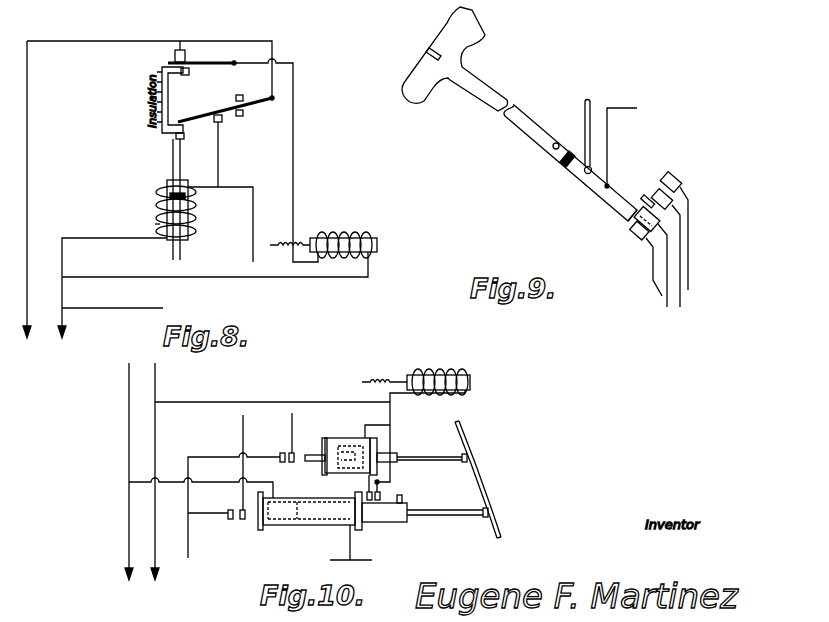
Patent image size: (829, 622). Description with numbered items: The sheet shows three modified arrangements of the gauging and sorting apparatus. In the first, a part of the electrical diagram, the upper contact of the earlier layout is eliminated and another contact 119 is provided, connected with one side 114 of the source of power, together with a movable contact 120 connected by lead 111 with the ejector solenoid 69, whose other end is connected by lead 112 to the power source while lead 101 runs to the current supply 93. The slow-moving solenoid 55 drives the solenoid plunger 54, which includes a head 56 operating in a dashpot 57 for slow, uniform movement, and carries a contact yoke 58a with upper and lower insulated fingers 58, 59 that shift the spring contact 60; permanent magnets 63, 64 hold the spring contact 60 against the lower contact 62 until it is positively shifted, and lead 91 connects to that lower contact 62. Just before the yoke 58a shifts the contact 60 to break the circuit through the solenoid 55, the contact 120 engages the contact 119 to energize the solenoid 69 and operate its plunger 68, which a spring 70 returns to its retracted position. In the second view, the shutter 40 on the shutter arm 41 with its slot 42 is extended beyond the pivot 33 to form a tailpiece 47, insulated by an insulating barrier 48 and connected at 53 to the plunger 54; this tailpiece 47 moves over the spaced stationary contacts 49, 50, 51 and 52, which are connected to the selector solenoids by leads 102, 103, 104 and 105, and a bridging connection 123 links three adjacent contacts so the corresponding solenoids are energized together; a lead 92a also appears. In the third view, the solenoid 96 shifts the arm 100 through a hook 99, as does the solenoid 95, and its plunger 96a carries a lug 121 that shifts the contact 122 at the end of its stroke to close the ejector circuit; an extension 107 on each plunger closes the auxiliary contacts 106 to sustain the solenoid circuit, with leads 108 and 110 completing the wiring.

In FIG. 9, the pivot 33 is at (553, 148).
In FIG. 9, the shutter 40 is at (478, 32).
In FIG. 9, the shutter arm 41 is at (523, 117).
In FIG. 9, the slot 42 is at (436, 33).
In FIG. 9, the tailpiece 47 is at (611, 195).
In FIG. 9, the insulating barrier 48 is at (567, 165).
In FIG. 9, the stationary contact 49 is at (638, 234).
In FIG. 9, the stationary contact 50 is at (630, 222).
In FIG. 9, the stationary contact 51 is at (657, 182).
In FIG. 9, the stationary contact 52 is at (677, 176).
In FIG. 9, the connection 53 is at (587, 176).
In FIG. 8, the solenoid plunger 54 is at (173, 157).
In FIG. 9, the solenoid plunger 54 is at (591, 103).
In FIG. 8, the slow moving solenoid 55 is at (158, 210).
In FIG. 8, the head 56 is at (188, 197).
In FIG. 8, the dashpot 57 is at (190, 222).
In FIG. 8, the upper insulated finger 58 is at (190, 72).
In FIG. 8, the yoke 58a is at (170, 98).
In FIG. 8, the lower insulated finger 59 is at (185, 131).
In FIG. 8, the spring contact 60 is at (188, 117).
In FIG. 8, the lower contact 62 is at (222, 121).
In FIG. 8, the permanent magnet 63 is at (240, 95).
In FIG. 8, the permanent magnet 64 is at (245, 114).
In FIG. 8, the plunger 68 is at (377, 245).
In FIG. 10, the plunger 68 is at (470, 383).
In FIG. 8, the ejector solenoid 69 is at (345, 234).
In FIG. 10, the ejector solenoid 69 is at (441, 371).
In FIG. 8, the spring 70 is at (297, 241).
In FIG. 10, the spring 70 is at (377, 377).
In FIG. 8, the lead 91 is at (255, 213).
In FIG. 9, the conductor 92a is at (608, 137).
In FIG. 8, the current supply 93 is at (40, 343).
In FIG. 10, the current supply 93 is at (138, 587).
In FIG. 10, the solenoid 95 is at (352, 438).
In FIG. 10, the solenoid 96 is at (305, 527).
In FIG. 10, the plunger 96a is at (390, 523).
In FIG. 10, the hook 99 is at (488, 507).
In FIG. 10, the arm 100 is at (477, 480).
In FIG. 8, the lead 101 is at (127, 308).
In FIG. 9, the lead 102 is at (653, 280).
In FIG. 9, the lead 103 is at (667, 291).
In FIG. 9, the lead 104 is at (681, 238).
In FIG. 9, the lead 105 is at (689, 265).
In FIG. 10, the auxiliary contacts 106 is at (233, 521).
In FIG. 10, the extension 107 is at (273, 532).
In FIG. 10, the conductor 108 is at (217, 458).
In FIG. 8, the conductor 110 is at (65, 259).
In FIG. 10, the conductor 110 is at (160, 441).
In FIG. 8, the lead 111 is at (294, 156).
In FIG. 8, the lead 112 is at (219, 278).
In FIG. 10, the lead 112 is at (275, 400).
In FIG. 8, the side of the source of power 114 is at (28, 148).
In FIG. 10, the side of the source of power 114 is at (128, 535).
In FIG. 8, the contact 119 is at (192, 53).
In FIG. 8, the movable contact 120 is at (188, 61).
In FIG. 10, the lug 121 is at (403, 500).
In FIG. 10, the contact 122 is at (381, 494).
In FIG. 9, the bridging connection 123 is at (645, 198).